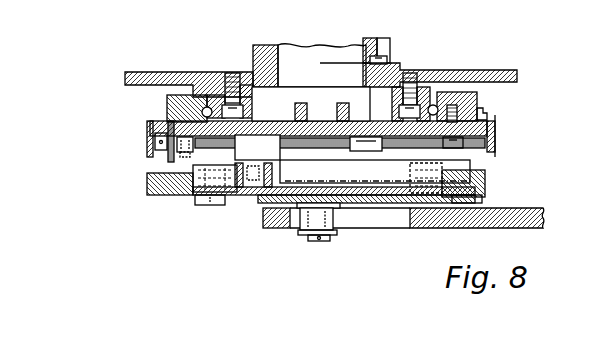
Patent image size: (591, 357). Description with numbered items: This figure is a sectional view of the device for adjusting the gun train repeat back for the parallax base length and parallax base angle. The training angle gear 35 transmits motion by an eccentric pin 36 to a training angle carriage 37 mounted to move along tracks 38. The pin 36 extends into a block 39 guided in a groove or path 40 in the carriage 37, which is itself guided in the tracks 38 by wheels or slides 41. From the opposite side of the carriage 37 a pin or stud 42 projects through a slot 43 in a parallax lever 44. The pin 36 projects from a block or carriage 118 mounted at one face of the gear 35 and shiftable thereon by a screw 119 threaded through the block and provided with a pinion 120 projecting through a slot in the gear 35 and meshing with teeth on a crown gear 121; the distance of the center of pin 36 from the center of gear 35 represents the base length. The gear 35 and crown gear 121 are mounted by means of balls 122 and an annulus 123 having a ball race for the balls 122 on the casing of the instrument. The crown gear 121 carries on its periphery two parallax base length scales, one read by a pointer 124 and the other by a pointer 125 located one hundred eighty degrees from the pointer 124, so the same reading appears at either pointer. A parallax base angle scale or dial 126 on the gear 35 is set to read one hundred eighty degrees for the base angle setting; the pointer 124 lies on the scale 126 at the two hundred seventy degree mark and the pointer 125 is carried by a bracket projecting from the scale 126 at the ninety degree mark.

The training angle gear 35 is at (497, 140).
The eccentric pin 36 is at (222, 204).
The training angle carriage 37 is at (262, 204).
The tracks 38 is at (158, 184).
The block 39 is at (255, 196).
The groove or path 40 is at (370, 157).
The wheels or slides 41 is at (188, 194).
The pin or stud 42 is at (318, 243).
The slot 43 is at (365, 222).
The parallax lever 44 is at (520, 228).
The block or carriage 118 is at (280, 150).
The screw 119 is at (198, 162).
The pinion 120 is at (153, 160).
The crown gear 121 is at (167, 100).
The balls 122 is at (438, 106).
The annulus 123 is at (427, 96).
The pointer 124 is at (160, 121).
The pointer 125 is at (480, 118).
The parallax base angle scale or dial 126 is at (160, 123).